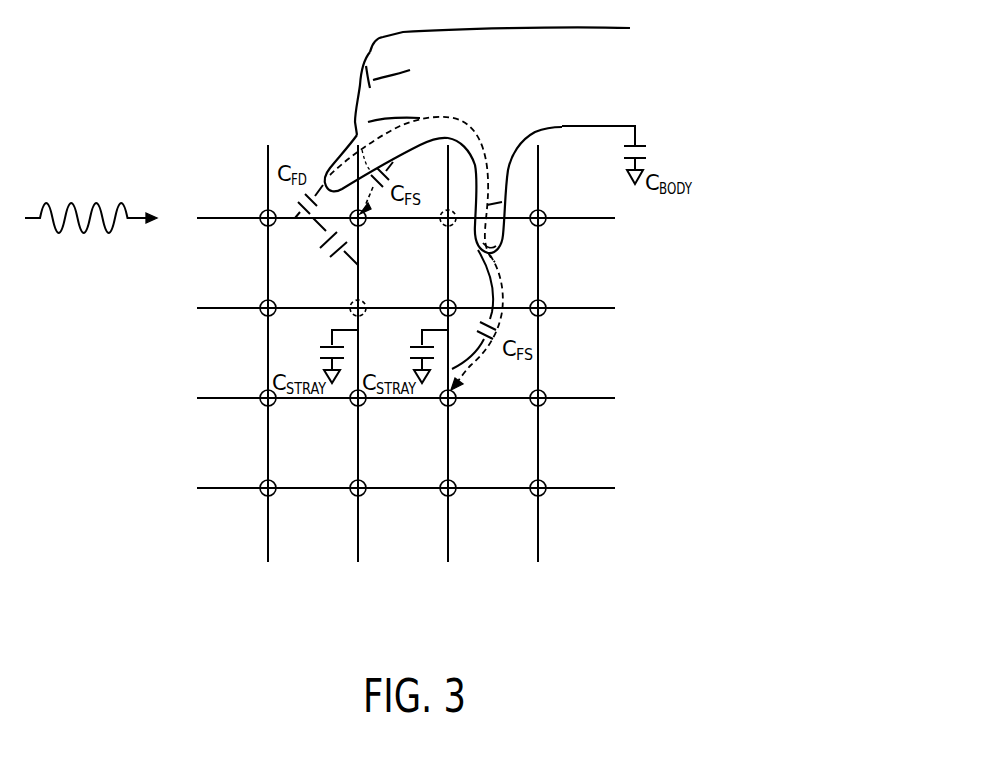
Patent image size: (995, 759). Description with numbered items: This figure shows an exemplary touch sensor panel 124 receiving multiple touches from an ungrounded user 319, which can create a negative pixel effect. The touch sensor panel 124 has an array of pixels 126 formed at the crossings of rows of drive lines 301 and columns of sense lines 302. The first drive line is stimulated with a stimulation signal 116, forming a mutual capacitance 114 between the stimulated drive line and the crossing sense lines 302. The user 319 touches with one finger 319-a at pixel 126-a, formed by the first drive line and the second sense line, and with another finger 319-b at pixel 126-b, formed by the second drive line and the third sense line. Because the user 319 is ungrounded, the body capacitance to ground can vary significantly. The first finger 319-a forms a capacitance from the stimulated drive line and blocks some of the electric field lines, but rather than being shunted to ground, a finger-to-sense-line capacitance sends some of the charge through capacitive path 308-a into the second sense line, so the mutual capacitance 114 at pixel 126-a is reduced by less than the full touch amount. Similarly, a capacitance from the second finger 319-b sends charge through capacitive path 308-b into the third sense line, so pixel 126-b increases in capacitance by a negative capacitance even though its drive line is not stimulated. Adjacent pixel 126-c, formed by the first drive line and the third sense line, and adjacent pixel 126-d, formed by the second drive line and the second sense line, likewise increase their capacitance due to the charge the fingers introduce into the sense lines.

The touch sensor panel 124 is at (716, 126).
The drive line 301 is at (212, 217).
The sense line 302 is at (358, 547).
The stimulation signal Vstm 116 is at (72, 205).
The pixel 126 is at (262, 223).
The mutual capacitance Csig 114 is at (323, 257).
The pixel 126-a is at (362, 226).
The pixel 126-b is at (441, 311).
The pixel 126-c is at (442, 223).
The pixel 126-d is at (350, 311).
The user 319 is at (364, 43).
The finger 319-a is at (340, 148).
The finger 319-b is at (497, 232).
The capacitive path 308-a is at (450, 114).
The capacitive path 308-b is at (520, 309).